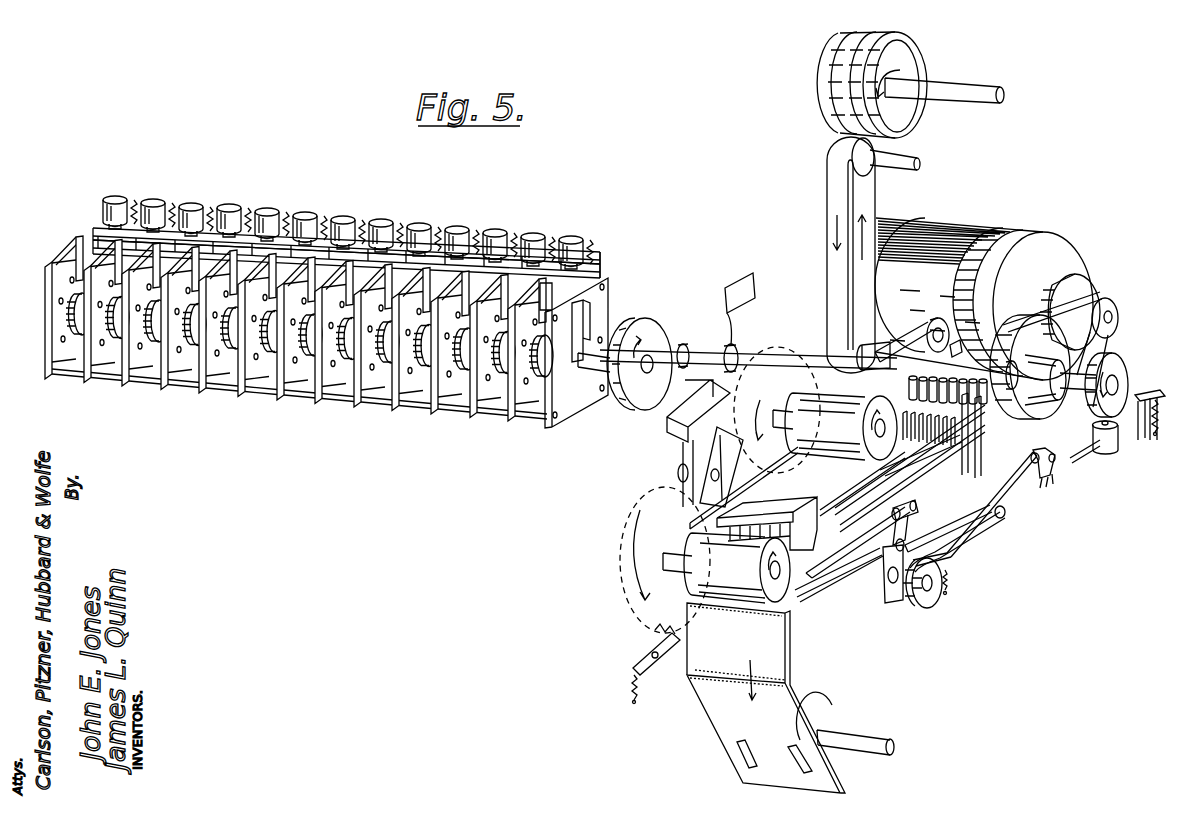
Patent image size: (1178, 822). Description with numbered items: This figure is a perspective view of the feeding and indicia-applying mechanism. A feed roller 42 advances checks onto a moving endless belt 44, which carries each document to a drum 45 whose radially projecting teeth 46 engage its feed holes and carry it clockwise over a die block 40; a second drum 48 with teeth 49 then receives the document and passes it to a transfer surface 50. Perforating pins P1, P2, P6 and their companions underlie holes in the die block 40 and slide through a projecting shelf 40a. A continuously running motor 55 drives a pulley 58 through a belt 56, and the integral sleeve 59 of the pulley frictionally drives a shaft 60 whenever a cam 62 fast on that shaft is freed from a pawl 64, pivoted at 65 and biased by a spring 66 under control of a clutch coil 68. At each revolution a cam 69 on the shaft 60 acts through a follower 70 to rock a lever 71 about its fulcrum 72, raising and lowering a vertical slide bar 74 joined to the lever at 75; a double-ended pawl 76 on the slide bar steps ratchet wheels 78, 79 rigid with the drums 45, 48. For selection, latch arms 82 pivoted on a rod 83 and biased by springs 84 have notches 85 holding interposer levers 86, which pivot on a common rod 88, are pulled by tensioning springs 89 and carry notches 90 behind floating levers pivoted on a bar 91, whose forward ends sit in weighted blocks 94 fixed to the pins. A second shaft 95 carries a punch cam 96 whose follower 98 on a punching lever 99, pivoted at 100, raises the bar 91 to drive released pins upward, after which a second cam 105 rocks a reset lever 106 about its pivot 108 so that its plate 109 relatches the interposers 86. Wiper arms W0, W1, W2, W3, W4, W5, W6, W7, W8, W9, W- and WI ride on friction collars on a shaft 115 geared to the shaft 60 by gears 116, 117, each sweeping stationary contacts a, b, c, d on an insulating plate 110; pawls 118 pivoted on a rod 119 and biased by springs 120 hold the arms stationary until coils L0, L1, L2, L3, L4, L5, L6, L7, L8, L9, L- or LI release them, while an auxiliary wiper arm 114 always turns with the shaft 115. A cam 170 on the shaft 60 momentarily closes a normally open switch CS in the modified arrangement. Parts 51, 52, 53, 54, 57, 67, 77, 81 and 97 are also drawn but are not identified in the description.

The plate 110 is at (215, 385).
The pawls 118 is at (95, 236).
The rod 119 is at (600, 268).
The springs 120 is at (138, 205).
The auxiliary wiper arm 114 is at (636, 330).
The shaft 115 is at (650, 378).
The gear 116 is at (636, 408).
The gear 117 is at (680, 343).
The cam 170 is at (724, 344).
The normally open switch CS is at (741, 273).
The shaft 60 is at (765, 352).
The feed roller 42 is at (822, 108).
The endless belt 44 is at (830, 197).
The motor 55 is at (1065, 258).
The belt 56 is at (1093, 300).
The roller 57 is at (1014, 392).
The pulley 58 is at (1034, 420).
The sleeve 59 is at (1057, 402).
The cam 62 is at (1116, 370).
The follower 70 is at (936, 320).
The lever 71 is at (906, 348).
The cam 69 is at (958, 340).
The contact roller 51 is at (912, 374).
The contact roller 52 is at (918, 386).
The contact roller 53 is at (928, 396).
The contact rollers 54 is at (948, 378).
The upright bar 81 is at (968, 428).
The latch arms 82 is at (957, 440).
The rod 83 is at (984, 424).
The springs 84 is at (992, 387).
The notch 85 is at (962, 442).
The interposer levers 86 is at (945, 478).
The rod 88 is at (970, 482).
The notch 90 is at (968, 466).
The bar 91 is at (912, 509).
The link 97 is at (880, 528).
The follower 98 is at (905, 548).
The punching lever 99 is at (1015, 490).
The pivot 100 is at (1048, 480).
The pivot connection 108 is at (1003, 518).
The plate 109 is at (960, 553).
The reset lever 106 is at (953, 570).
The second cam 105 is at (925, 606).
The tensioning springs 89 is at (953, 585).
The punch cam 96 is at (888, 604).
The weighted blocks 94 is at (800, 597).
The second shaft 95 is at (875, 580).
The ratchet wheel 78 is at (777, 410).
The pivot or fulcrum 72 is at (835, 426).
The drum 45 is at (828, 420).
The teeth 46 is at (865, 430).
The vertical slide bar 74 is at (683, 445).
The double-ended pawl 76 is at (710, 452).
The pivotal connection 75 is at (678, 475).
The ratchet wheel 79 is at (665, 560).
The second drum 48 is at (726, 568).
The teeth 49 is at (755, 568).
The die block 40 is at (800, 512).
The projecting shelf 40a is at (770, 557).
The transfer surface 50 is at (770, 660).
The lever 77 is at (656, 668).
The clutch coil 68 is at (1105, 450).
The lever 67 is at (1079, 451).
The pawl 64 is at (1140, 440).
The pivot 65 is at (1153, 434).
The spring 66 is at (1160, 432).
The stationary contact c is at (590, 405).
The stationary contact a is at (578, 318).
The stationary contact b is at (600, 338).
The stationary contact d is at (575, 372).
The clutch-controlling coil L0 is at (116, 198).
The clutch-controlling coil L1 is at (155, 201).
The clutch-controlling coil L2 is at (193, 205).
The clutch-controlling coil L3 is at (231, 206).
The clutch-controlling coil L4 is at (269, 210).
The clutch-controlling coil L5 is at (307, 214).
The clutch-controlling coil L6 is at (345, 218).
The clutch-controlling coil L7 is at (383, 221).
The clutch-controlling coil L8 is at (421, 225).
The clutch-controlling coil L9 is at (459, 228).
The clutch-controlling coil L- is at (535, 235).
The clutch-controlling coil LI is at (573, 238).
The wiper arm W0 is at (74, 289).
The wiper arm W1 is at (113, 293).
The wiper arm W2 is at (151, 296).
The wiper arm W3 is at (190, 300).
The wiper arm W4 is at (228, 303).
The wiper arm W5 is at (267, 307).
The wiper arm W6 is at (306, 310).
The wiper arm W7 is at (344, 314).
The wiper arm W8 is at (383, 317).
The wiper arm W9 is at (421, 321).
The wiper arm W- is at (499, 328).
The wiper arm WI is at (537, 331).
The perforating pin P1 is at (719, 550).
The perforating pin P2 is at (757, 511).
The perforating pin P6 is at (782, 515).